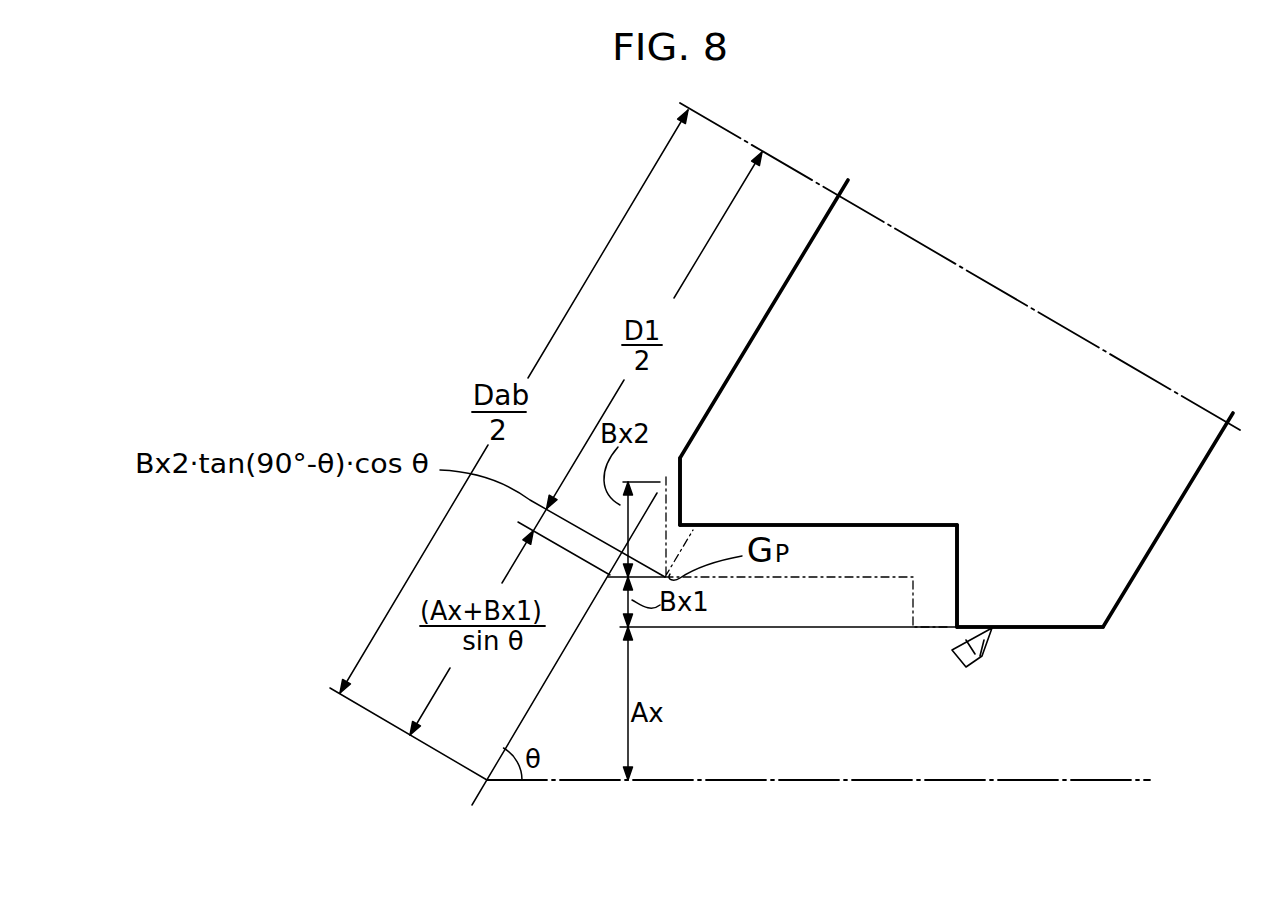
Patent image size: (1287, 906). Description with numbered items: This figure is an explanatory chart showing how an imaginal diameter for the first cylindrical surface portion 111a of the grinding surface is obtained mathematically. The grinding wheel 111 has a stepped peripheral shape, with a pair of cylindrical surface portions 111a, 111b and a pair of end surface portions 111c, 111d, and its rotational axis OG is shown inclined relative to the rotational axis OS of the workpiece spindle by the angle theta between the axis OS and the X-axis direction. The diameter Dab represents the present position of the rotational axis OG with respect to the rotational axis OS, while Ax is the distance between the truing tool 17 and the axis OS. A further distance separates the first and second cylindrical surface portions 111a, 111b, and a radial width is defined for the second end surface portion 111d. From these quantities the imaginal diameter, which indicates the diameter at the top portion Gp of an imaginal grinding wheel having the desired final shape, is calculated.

The grinding wheel 111 is at (982, 416).
The first cylindrical surface portion 111a is at (1103, 628).
The second cylindrical surface portion 111b is at (832, 523).
The end surface portion 111c is at (956, 553).
The second end surface portion 111d is at (680, 491).
The truing tool 17 is at (972, 665).
The rotational axis of the grinding wheel OG is at (1098, 346).
The rotational axis of the workpiece spindle OS is at (1100, 780).